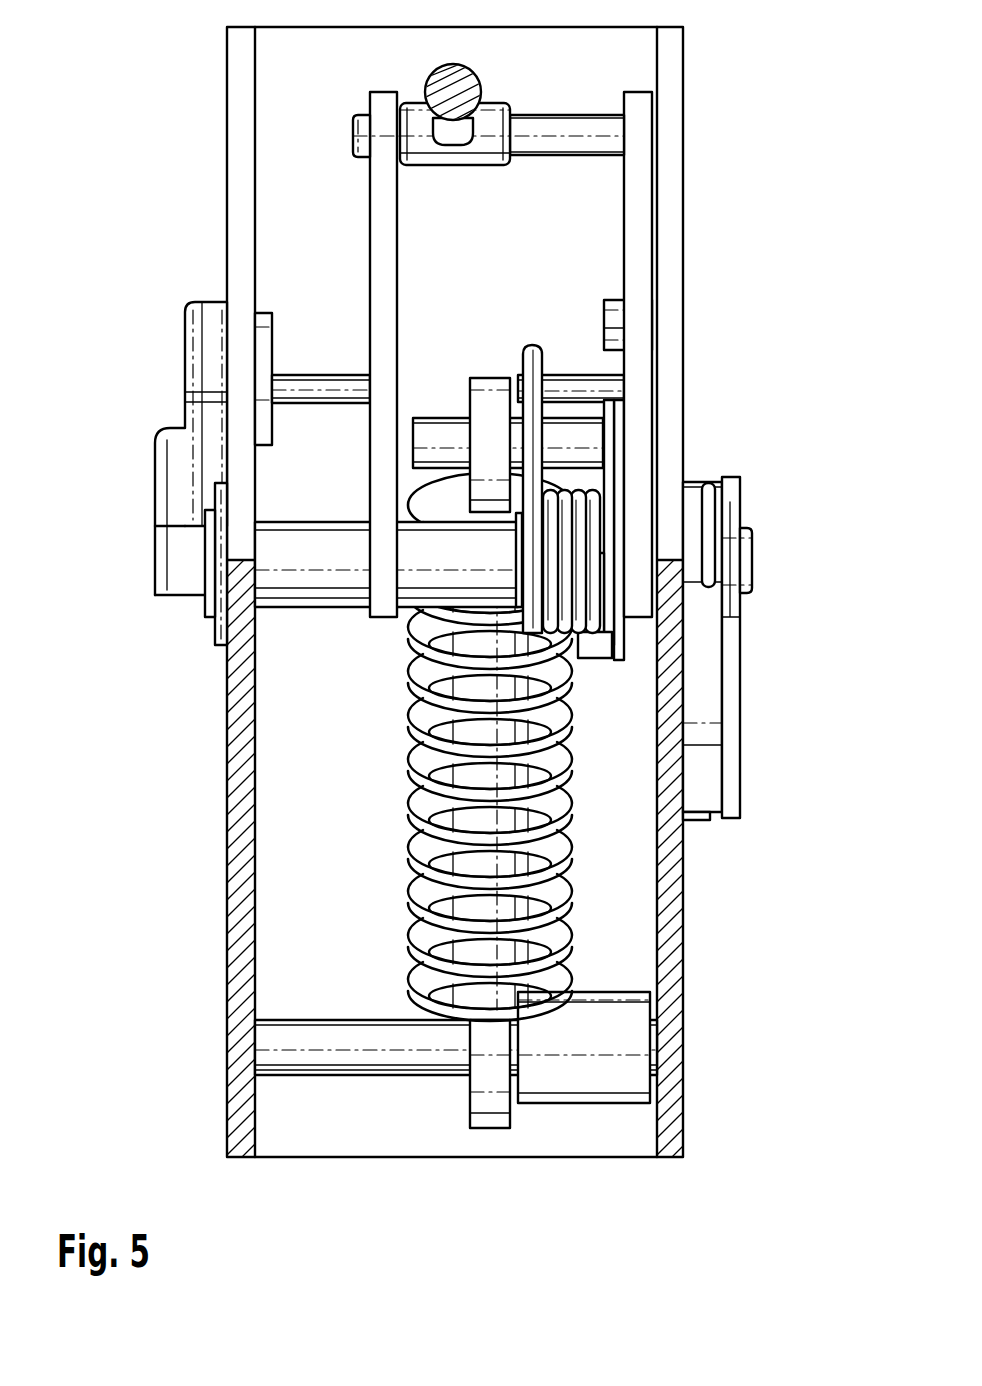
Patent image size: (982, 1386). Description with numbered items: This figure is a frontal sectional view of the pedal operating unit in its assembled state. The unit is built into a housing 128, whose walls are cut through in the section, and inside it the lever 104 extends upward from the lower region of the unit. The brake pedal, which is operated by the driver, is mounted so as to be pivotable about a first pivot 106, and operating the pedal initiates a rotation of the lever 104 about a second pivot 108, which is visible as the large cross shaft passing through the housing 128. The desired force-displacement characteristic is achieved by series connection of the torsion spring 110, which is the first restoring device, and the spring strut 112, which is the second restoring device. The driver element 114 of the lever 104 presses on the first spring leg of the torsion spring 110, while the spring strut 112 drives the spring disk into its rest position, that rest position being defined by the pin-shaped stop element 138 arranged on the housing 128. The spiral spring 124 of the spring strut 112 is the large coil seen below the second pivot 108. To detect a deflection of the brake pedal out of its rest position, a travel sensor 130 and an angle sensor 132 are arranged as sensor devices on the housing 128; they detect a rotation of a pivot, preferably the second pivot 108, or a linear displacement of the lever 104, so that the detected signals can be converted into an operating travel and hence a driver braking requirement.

The lever 104 is at (385, 237).
The first pivot 106 is at (328, 1035).
The second pivot 108 is at (325, 573).
The torsion spring 110 is at (567, 510).
The spring strut 112 is at (543, 807).
The driver element 114 is at (603, 385).
The spiral spring 124 is at (418, 850).
The housing 128 is at (670, 171).
The travel sensor 130 is at (710, 498).
The angle sensor 132 is at (212, 347).
The stop element 138 is at (617, 317).